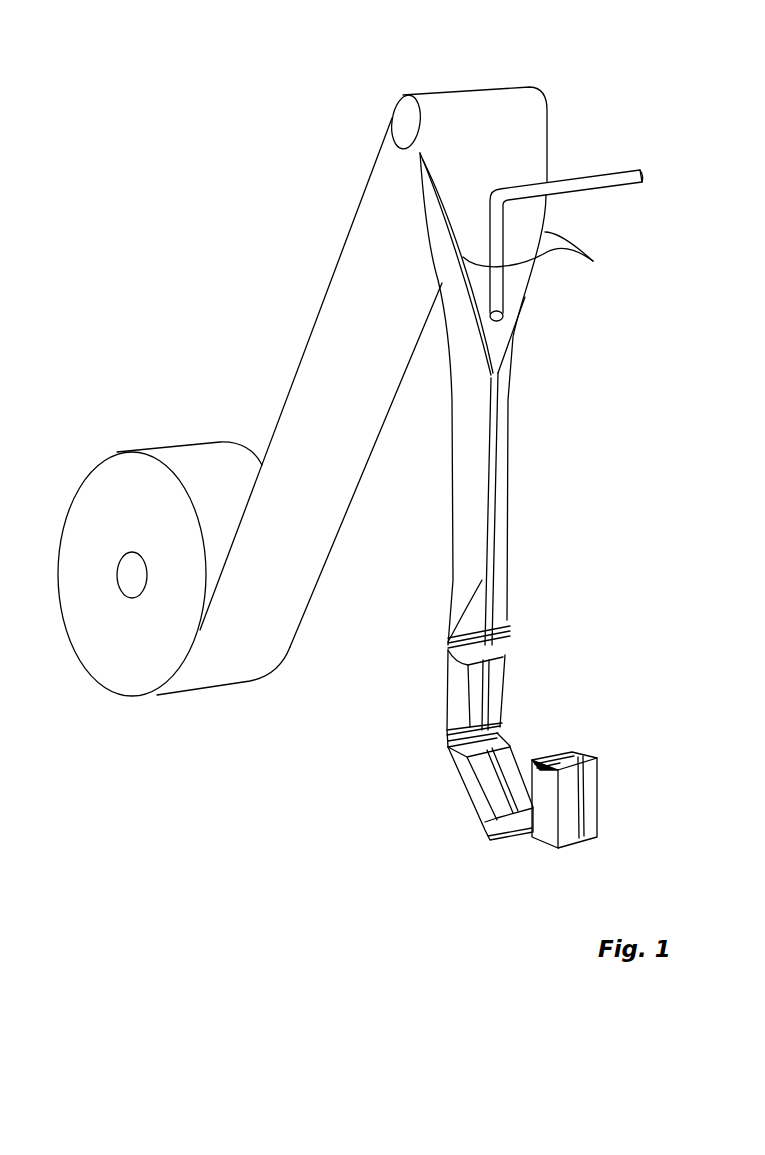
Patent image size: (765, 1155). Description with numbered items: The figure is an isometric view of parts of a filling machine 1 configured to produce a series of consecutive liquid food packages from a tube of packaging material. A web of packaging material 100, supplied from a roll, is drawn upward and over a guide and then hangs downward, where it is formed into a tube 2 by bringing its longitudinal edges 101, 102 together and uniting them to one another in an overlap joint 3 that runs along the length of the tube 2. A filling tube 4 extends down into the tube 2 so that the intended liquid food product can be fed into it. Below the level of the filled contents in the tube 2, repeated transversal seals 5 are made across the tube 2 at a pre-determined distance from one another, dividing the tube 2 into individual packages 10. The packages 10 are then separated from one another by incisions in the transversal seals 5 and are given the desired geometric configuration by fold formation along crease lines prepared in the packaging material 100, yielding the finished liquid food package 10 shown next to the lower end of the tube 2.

The filling machine 1 is at (606, 79).
The tube 2 is at (465, 487).
The overlap joint 3 is at (490, 405).
The filling tube 4 is at (600, 180).
The transversal seals 5 is at (510, 634).
The packages 10 is at (587, 802).
The web of packaging material 100 is at (300, 568).
The longitudinal edge 101 is at (575, 256).
The longitudinal edge 102 is at (575, 256).